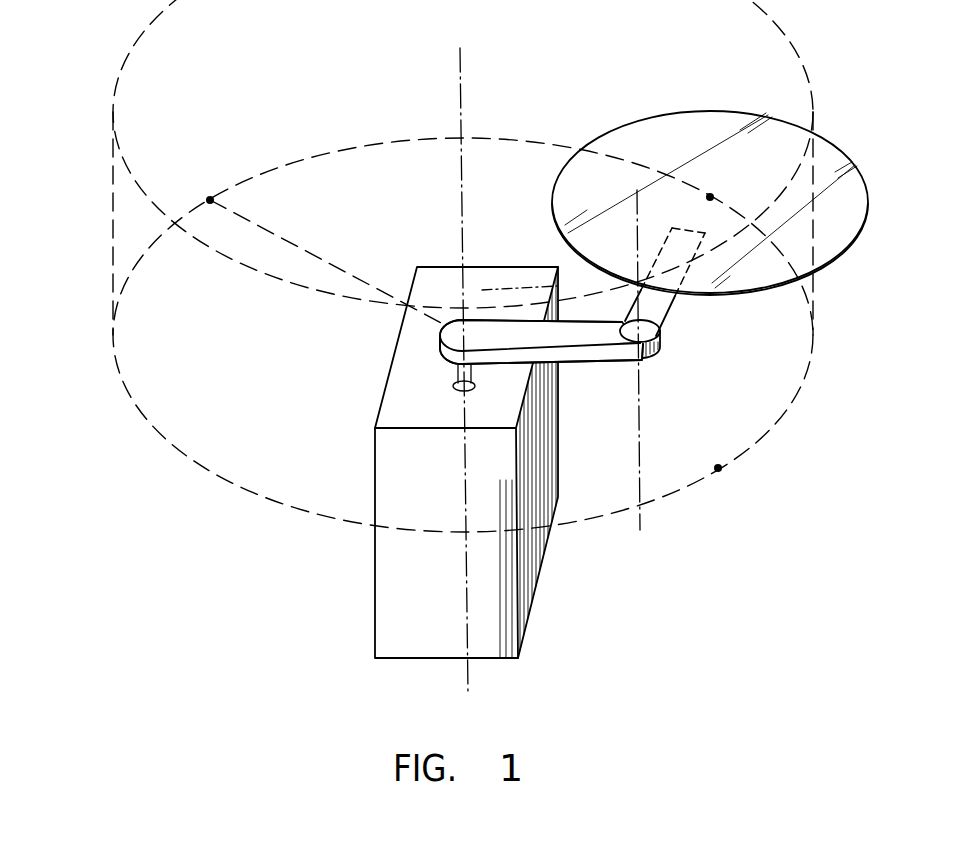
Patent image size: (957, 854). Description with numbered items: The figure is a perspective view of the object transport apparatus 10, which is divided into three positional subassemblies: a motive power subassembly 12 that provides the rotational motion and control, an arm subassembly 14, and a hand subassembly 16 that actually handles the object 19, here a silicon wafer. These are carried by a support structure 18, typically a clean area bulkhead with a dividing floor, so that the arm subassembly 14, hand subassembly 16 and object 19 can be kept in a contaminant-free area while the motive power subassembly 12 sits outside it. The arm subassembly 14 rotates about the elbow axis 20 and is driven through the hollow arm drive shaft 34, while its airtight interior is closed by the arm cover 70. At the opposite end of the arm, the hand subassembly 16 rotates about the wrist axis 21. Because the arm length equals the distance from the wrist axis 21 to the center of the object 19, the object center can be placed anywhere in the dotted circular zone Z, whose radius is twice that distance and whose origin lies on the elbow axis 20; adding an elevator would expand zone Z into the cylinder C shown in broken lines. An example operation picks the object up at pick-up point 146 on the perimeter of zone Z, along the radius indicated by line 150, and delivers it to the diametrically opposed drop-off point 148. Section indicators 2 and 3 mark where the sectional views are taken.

The object transport apparatus 10 is at (491, 353).
The motive power subassembly 12 is at (423, 462).
The arm subassembly 14 is at (580, 369).
The hand subassembly 16 is at (675, 320).
The support structure 18 is at (420, 416).
The object 19 is at (653, 128).
The elbow axis 20 is at (463, 121).
The wrist axis 21 is at (640, 418).
The arm drive shaft 34 is at (473, 373).
The arm cover 70 is at (523, 335).
The pick-up point 146 is at (212, 199).
The drop-off point 148 is at (463, 335).
The radius line 150 is at (300, 250).
The section line 2- 2 is at (452, 374).
The section line 3- 3 is at (440, 350).
The cylinder C is at (133, 238).
The circular zone Z is at (280, 203).